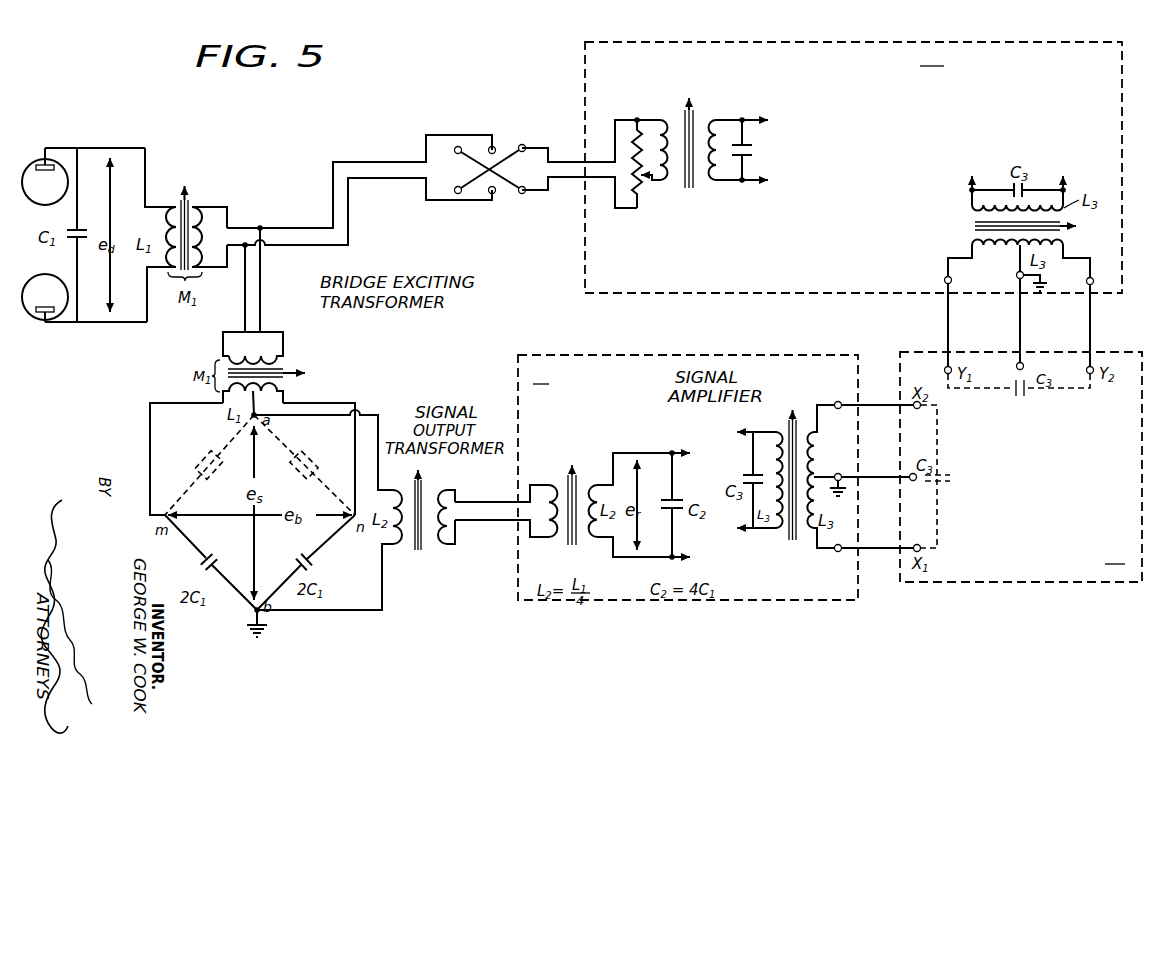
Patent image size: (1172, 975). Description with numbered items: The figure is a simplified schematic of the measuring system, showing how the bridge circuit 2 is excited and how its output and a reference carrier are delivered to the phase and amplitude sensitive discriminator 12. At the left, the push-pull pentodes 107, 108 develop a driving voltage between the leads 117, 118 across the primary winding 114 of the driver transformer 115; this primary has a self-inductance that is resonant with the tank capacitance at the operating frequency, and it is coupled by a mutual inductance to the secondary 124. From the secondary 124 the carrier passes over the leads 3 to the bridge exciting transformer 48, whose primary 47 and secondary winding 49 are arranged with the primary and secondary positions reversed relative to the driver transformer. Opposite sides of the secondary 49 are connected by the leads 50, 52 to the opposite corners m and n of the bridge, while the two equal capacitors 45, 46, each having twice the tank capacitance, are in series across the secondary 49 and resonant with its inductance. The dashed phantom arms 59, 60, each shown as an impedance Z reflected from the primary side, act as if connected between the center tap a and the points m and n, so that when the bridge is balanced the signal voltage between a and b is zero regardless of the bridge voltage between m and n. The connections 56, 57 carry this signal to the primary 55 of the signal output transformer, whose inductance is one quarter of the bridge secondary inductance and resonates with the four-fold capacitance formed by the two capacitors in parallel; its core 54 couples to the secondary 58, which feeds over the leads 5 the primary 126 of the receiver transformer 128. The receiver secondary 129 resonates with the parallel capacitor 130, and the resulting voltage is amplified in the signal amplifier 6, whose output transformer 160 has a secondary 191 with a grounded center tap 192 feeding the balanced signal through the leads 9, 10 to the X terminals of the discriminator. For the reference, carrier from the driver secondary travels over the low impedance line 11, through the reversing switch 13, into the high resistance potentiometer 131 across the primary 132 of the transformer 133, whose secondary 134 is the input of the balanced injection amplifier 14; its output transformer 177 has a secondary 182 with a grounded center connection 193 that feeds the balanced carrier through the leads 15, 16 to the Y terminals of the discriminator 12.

The bridge circuit 2 is at (141, 434).
The leads to bridge exciting transformer 3 is at (264, 291).
The leads from signal output transformer to receiver transformer 5 is at (502, 499).
The signal amplifier 6 is at (688, 477).
The lead 9 is at (871, 552).
The lead 10 is at (890, 403).
The low impedance line 11 is at (306, 223).
The phase and amplitude sensitive discriminator 12 is at (1021, 467).
The reversing switch 13 is at (486, 207).
The balanced injection amplifier 14 is at (853, 167).
The lead 15 is at (944, 333).
The lead 16 is at (1092, 329).
The capacitor 45 is at (217, 556).
The capacitor 46 is at (312, 561).
The primary winding of bridge exciting transformer 47 is at (272, 354).
The bridge exciting transformer 48 is at (299, 367).
The secondary winding 49 is at (288, 387).
The lead 50 is at (354, 439).
The lead 52 is at (150, 466).
The core of signal output transformer 54 is at (428, 544).
The primary of the signal transformer 55 is at (395, 543).
The connection 56 is at (338, 613).
The connection 57 is at (379, 431).
The secondary winding of signal output transformer 58 is at (448, 531).
The phantom arm impedance 59 is at (197, 464).
The phantom arm impedance 60 is at (328, 451).
The push-pull pentode 107 is at (40, 160).
The push-pull pentode 108 is at (42, 320).
The primary winding 114 is at (168, 208).
The driver transformer 115 is at (190, 202).
The lead 117 is at (87, 149).
The lead 118 is at (87, 325).
The secondary 124 is at (212, 213).
The primary of the receiver transformer 126 is at (556, 531).
The receiver transformer 128 is at (573, 478).
The secondary of the receiver transformer 129 is at (601, 530).
The parallel capacitor 130 is at (676, 496).
The high resistance potentiometer 131 is at (668, 132).
The primary 132 is at (666, 182).
The transformer 133 is at (701, 125).
The secondary 134 is at (744, 120).
The output transformer 160 is at (790, 533).
The output transformer 177 is at (1070, 235).
The secondary 182 is at (977, 241).
The secondary 191 is at (811, 449).
The grounded center tap 192 is at (812, 473).
The grounded center connection 193 is at (1016, 271).